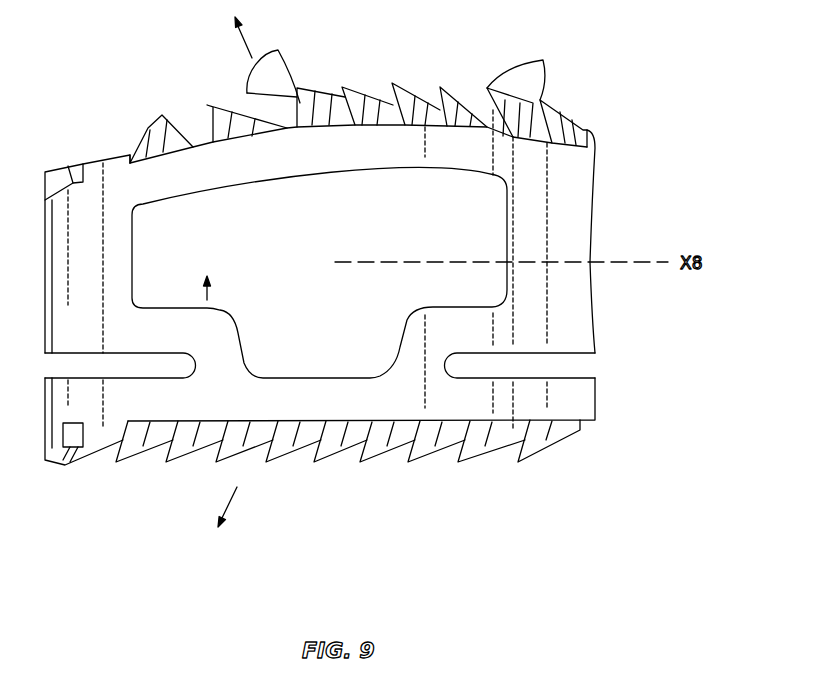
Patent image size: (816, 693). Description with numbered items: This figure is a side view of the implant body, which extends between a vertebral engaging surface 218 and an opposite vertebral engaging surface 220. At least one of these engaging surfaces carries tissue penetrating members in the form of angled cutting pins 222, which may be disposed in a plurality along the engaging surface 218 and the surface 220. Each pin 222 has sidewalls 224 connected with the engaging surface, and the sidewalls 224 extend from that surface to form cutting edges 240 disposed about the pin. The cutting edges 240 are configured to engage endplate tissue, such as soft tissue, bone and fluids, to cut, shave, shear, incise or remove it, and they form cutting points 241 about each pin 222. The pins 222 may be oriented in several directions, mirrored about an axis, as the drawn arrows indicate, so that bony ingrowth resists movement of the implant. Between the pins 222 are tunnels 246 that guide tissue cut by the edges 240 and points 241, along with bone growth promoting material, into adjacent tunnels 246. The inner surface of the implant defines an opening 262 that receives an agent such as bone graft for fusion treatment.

The vertebral engaging surface 218 is at (558, 140).
The vertebral engaging surface 220 is at (393, 430).
The angled cutting pin 222 is at (395, 107).
The sidewall 224 is at (193, 128).
The cutting edge 240 is at (370, 97).
The cutting point 241 is at (267, 60).
The tunnel 246 is at (140, 115).
The opening 262 is at (207, 300).